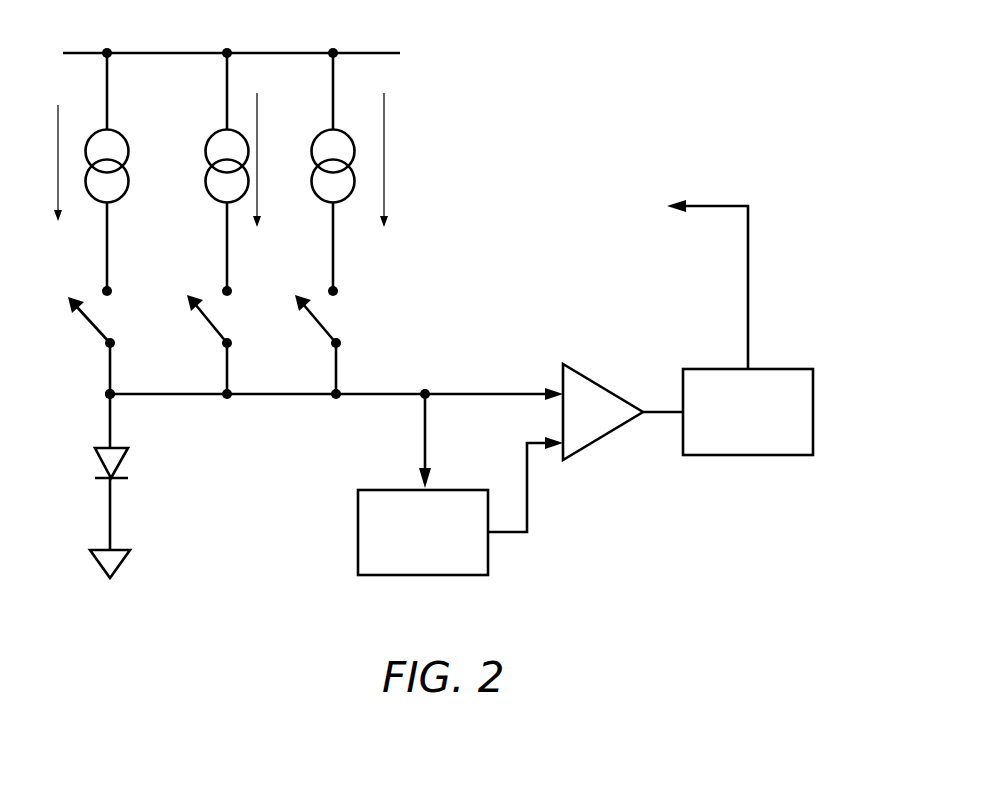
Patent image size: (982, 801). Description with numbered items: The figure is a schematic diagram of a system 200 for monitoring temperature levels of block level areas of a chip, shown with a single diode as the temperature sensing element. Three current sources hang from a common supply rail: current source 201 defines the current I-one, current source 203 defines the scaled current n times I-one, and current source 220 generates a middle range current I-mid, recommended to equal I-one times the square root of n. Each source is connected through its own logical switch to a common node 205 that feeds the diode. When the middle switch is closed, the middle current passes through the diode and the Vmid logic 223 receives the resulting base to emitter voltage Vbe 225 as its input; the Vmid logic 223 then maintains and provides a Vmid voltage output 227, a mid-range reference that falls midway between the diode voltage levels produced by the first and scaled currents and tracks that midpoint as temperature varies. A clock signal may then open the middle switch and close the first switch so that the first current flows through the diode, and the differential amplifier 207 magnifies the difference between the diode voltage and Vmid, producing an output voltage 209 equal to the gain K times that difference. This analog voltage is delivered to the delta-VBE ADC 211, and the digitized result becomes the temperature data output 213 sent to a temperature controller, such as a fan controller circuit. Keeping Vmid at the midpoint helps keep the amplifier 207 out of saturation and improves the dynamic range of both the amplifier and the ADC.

The temperature sensing circuit 200 is at (663, 72).
The current source 201 is at (110, 130).
The current source 220 is at (207, 193).
The current source 203 is at (318, 197).
The node coupled to diode D1 205 is at (108, 392).
The differential amplifier 207 is at (585, 373).
The output voltage 209 is at (657, 412).
The ΔVBE ADC 211 is at (783, 369).
The digital temperature data output 213 is at (635, 160).
The Vmid logic 223 is at (453, 490).
The Vbe 225 is at (423, 440).
The Vmid voltage output 227 is at (525, 508).